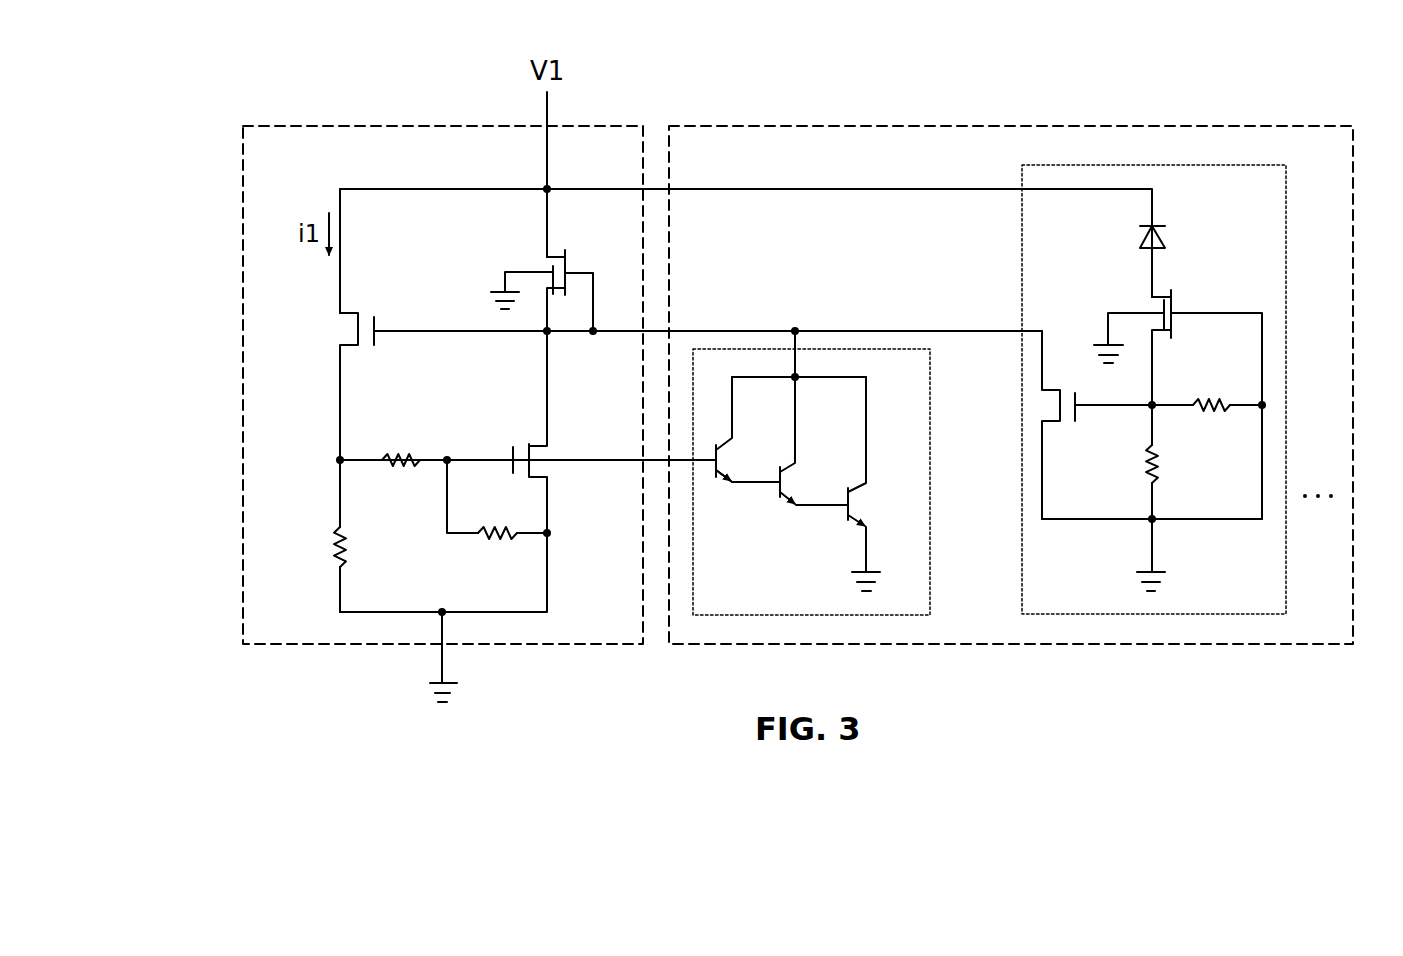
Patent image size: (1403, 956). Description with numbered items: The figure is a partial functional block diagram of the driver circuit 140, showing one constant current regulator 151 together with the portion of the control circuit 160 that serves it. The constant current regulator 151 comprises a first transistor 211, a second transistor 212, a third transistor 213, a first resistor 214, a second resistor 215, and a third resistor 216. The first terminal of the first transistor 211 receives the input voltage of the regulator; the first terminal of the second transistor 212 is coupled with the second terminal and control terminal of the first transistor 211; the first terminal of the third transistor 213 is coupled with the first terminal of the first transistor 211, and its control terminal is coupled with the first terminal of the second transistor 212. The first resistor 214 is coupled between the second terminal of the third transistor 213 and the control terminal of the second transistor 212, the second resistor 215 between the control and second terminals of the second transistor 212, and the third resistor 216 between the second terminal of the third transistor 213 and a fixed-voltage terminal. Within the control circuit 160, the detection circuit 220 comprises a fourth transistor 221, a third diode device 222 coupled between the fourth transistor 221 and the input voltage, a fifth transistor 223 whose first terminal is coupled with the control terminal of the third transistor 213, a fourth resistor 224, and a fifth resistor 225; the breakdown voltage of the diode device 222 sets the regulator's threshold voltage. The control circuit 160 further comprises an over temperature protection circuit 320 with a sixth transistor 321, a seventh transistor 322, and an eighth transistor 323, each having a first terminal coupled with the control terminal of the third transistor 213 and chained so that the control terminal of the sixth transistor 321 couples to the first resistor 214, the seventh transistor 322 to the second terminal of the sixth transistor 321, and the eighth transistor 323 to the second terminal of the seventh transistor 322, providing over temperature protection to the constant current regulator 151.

The driver circuit 140 is at (1268, 80).
The constant current regulator 151 is at (447, 126).
The control circuit 160 is at (1010, 126).
The first transistor 211 is at (567, 260).
The second transistor 212 is at (542, 455).
The third transistor 213 is at (340, 331).
The first resistor 214 is at (403, 450).
The second resistor 215 is at (495, 542).
The third resistor 216 is at (330, 543).
The detection circuit 220 is at (1186, 389).
The fourth transistor 221 is at (1177, 303).
The third diode device 222 is at (1140, 238).
The fifth transistor 223 is at (1050, 408).
The fourth resistor 224 is at (1210, 415).
The fifth resistor 225 is at (1145, 462).
The over temperature protection circuit 320 is at (847, 473).
The sixth transistor 321 is at (727, 462).
The seventh transistor 322 is at (790, 485).
The eighth transistor 323 is at (860, 505).